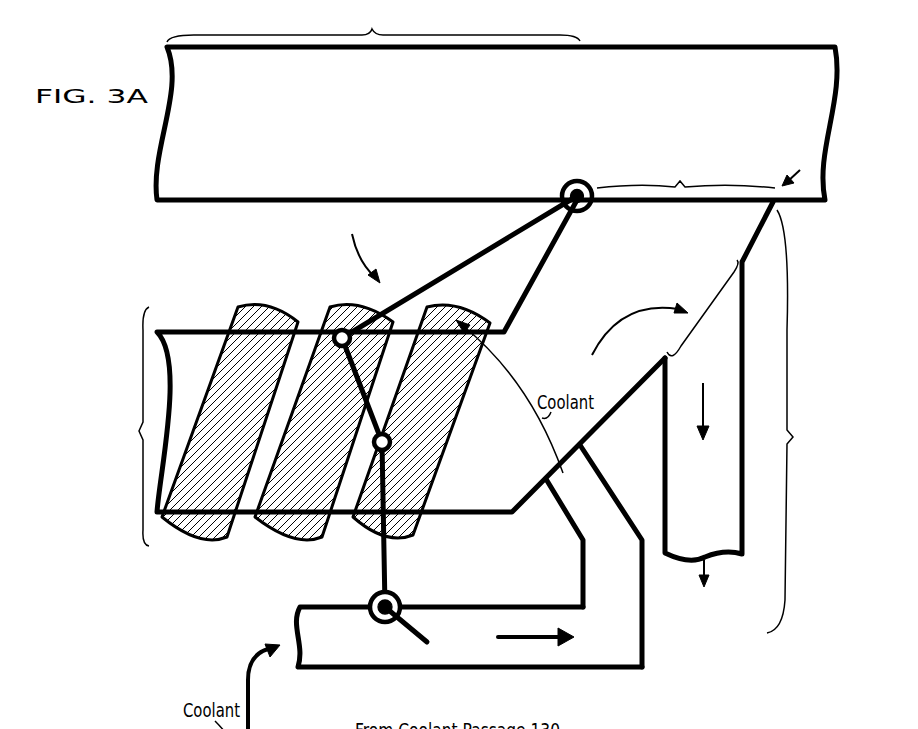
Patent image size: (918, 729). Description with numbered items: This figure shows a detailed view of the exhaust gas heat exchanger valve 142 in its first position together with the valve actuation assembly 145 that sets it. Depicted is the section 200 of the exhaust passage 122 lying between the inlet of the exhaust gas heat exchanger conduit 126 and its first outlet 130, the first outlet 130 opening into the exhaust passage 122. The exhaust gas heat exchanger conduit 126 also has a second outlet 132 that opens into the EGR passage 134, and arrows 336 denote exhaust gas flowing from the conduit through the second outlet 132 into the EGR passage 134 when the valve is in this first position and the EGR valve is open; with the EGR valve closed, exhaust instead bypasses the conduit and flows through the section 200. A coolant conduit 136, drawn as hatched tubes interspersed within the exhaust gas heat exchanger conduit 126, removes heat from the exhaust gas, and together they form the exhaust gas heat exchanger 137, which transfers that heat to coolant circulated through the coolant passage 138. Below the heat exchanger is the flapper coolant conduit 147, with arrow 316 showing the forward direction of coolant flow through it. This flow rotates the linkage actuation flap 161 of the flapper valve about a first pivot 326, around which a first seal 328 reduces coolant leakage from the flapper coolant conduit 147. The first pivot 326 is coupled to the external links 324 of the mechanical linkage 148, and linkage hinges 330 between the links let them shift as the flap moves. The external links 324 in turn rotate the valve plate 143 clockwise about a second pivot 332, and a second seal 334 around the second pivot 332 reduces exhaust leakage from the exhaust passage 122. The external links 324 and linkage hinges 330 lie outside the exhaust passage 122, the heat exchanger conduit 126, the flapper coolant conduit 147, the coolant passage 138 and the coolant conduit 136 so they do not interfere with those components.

The section of the exhaust passage 200 is at (373, 24).
The exhaust passage 122 is at (365, 133).
The second seal 334 is at (576, 180).
The second pivot 332 is at (564, 190).
The first outlet 130 is at (686, 174).
The valve plate 143 is at (690, 200).
The exhaust gas heat exchanger valve 142 is at (800, 167).
The mechanical linkage 148 is at (359, 247).
The external links 324 is at (507, 240).
The coolant conduit 136 is at (357, 307).
The linkage hinges 330 is at (335, 333).
The arrows 336 is at (623, 318).
The second outlet 132 is at (702, 308).
The exhaust gas heat exchanger conduit 126 is at (507, 434).
The EGR passage 134 is at (720, 473).
The exhaust gas heat exchanger 137 is at (127, 426).
The coolant passage 138 is at (618, 503).
The valve actuation assembly 145 is at (796, 421).
The flapper coolant conduit 147 is at (372, 670).
The first pivot 326 is at (376, 623).
The first seal 328 is at (380, 624).
The linkage actuation flap 161 is at (429, 641).
The arrow 316 is at (550, 641).